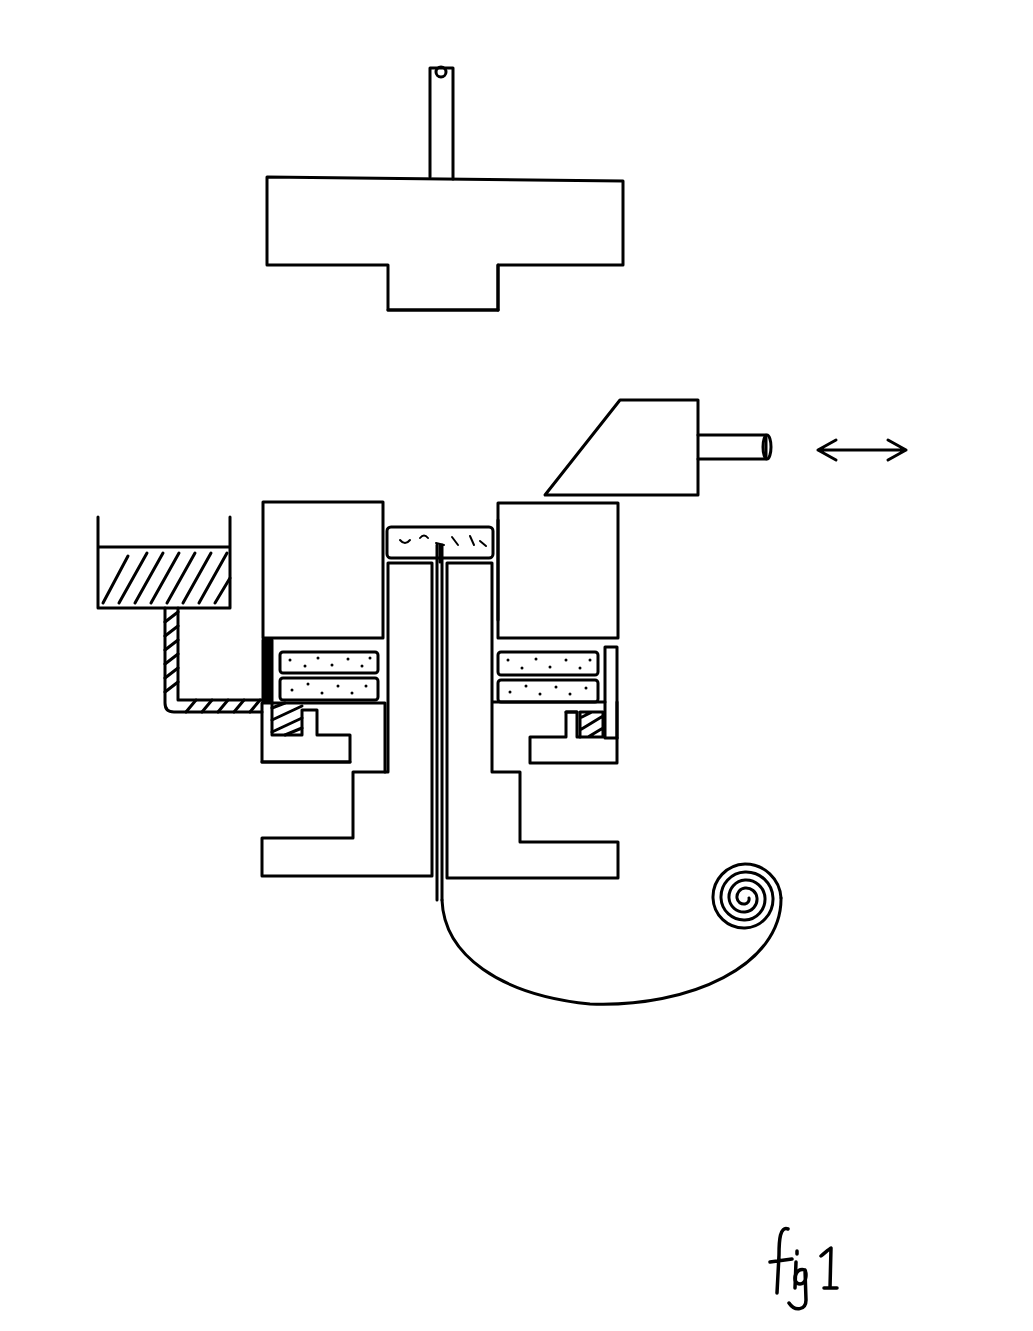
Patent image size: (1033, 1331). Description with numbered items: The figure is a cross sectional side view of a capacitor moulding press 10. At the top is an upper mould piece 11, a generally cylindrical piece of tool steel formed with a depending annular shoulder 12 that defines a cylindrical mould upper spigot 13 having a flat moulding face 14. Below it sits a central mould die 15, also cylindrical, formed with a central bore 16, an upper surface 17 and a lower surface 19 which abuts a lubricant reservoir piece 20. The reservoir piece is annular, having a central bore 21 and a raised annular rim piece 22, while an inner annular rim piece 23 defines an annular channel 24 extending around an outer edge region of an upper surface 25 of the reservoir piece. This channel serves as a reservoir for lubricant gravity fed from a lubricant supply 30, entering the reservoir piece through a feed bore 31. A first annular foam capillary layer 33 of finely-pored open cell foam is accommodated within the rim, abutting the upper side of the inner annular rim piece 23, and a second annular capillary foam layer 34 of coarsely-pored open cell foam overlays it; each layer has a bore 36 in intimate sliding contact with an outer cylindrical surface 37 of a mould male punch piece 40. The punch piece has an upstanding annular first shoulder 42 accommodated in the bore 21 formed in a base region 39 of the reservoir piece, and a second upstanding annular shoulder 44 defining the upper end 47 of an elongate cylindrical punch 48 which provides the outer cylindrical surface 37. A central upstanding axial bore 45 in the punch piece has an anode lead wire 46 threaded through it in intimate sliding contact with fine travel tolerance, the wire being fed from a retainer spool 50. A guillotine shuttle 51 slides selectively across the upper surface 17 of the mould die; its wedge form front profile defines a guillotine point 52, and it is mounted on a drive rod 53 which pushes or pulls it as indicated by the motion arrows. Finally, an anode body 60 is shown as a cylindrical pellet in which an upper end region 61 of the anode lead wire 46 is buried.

The capacitor moulding press 10 is at (754, 116).
The upper mould piece 11 is at (487, 203).
The depending annular shoulder 12 is at (499, 295).
The mould upper spigot 13 is at (432, 288).
The flat moulding face 14 is at (448, 330).
The central mould die 15 is at (593, 568).
The central bore 16 is at (399, 497).
The upper surface 17 is at (527, 485).
The lower surface 19 is at (618, 682).
The lubricant reservoir piece 20 is at (623, 700).
The central bore 21 is at (369, 751).
The raised annular rim piece 22 is at (268, 662).
The inner annular rim piece 23 is at (571, 727).
The annular channel 24 is at (275, 715).
The upper surface 25 is at (556, 725).
The lubricant supply 30 is at (167, 545).
The feed bore 31 is at (262, 706).
The first annular foam capillary layer 33 is at (408, 660).
The second annular capillary foam layer 34 is at (320, 658).
The bore 36 is at (517, 674).
The outer cylindrical surface 37 is at (527, 697).
The base region 39 is at (307, 748).
The mould male punch piece 40 is at (395, 818).
The first shoulder 42 is at (525, 802).
The second upstanding annular shoulder 44 is at (501, 572).
The central upstanding axial bore 45 is at (463, 772).
The anode lead wire 46 is at (441, 903).
The upper end 47 is at (462, 620).
The elongate cylindrical punch 48 is at (398, 770).
The retainer spool 50 is at (790, 870).
The guillotine shuttle 51 is at (643, 420).
The guillotine point 52 is at (562, 477).
The drive rod 53 is at (734, 442).
The anode body 60 is at (473, 519).
The upper end region 61 is at (456, 545).